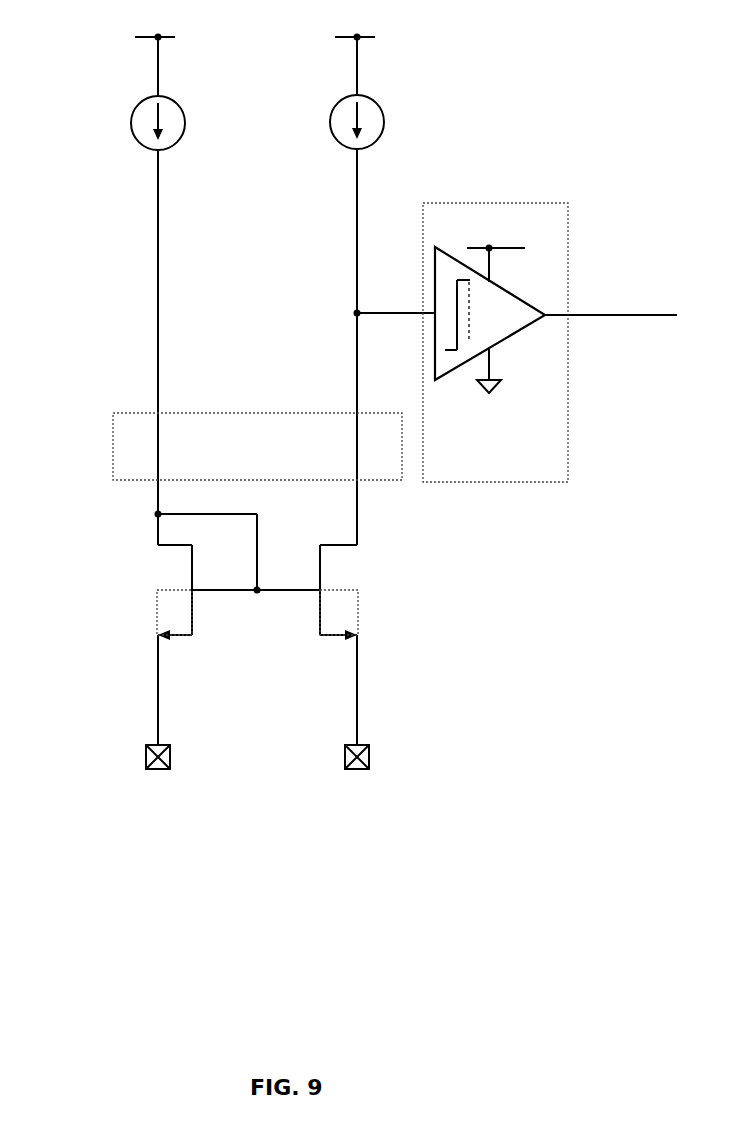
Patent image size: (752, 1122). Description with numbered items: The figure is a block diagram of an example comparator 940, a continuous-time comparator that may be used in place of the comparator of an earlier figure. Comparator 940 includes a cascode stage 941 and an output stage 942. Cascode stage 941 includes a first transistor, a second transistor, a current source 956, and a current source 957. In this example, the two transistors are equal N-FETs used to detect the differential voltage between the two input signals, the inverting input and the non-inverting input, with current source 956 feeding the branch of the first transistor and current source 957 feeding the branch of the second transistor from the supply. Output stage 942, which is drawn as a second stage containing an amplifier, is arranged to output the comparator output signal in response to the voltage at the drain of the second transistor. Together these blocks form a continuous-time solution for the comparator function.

The comparator 940 is at (349, 411).
The cascode stage 941 is at (257, 455).
The output stage 942 is at (550, 342).
The current source 956 is at (127, 125).
The current source 957 is at (385, 118).